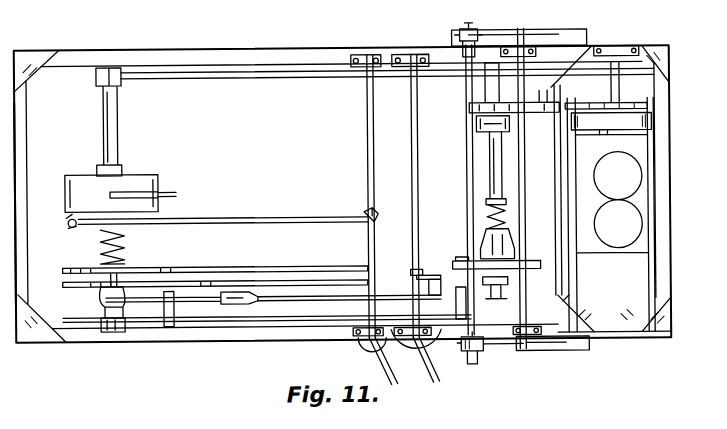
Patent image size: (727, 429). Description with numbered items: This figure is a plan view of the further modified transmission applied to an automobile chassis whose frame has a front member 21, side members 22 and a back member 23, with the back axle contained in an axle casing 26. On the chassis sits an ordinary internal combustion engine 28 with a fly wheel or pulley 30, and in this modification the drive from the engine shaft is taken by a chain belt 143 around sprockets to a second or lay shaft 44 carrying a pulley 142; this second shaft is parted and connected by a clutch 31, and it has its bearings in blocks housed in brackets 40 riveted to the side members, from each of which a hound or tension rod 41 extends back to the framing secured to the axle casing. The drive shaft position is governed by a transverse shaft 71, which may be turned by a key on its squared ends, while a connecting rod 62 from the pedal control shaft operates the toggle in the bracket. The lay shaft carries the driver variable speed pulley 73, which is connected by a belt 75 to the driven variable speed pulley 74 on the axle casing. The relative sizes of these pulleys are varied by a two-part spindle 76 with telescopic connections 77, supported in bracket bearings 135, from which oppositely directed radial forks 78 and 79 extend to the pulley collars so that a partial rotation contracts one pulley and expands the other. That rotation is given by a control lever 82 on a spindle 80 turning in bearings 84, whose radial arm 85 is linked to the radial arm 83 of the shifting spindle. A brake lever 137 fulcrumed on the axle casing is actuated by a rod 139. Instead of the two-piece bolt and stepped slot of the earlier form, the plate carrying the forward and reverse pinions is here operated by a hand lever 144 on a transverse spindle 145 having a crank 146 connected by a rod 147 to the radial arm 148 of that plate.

The front member 21 is at (669, 156).
The side members 22 is at (288, 66).
The back member 23 is at (27, 158).
The axle casing 26 is at (118, 128).
The internal combustion engine 28 is at (618, 199).
The pulley 30 is at (620, 118).
The clutch 31 is at (477, 125).
The bracket 40 is at (588, 350).
The tension rod 41 is at (248, 77).
The second shaft 44 is at (491, 178).
The connecting rod 62 is at (484, 346).
The transverse shaft 71 is at (467, 153).
The driver variable speed pulley 73 is at (463, 258).
The driven variable speed pulley 74 is at (150, 262).
The belt 75 is at (214, 268).
The spindle 76 is at (280, 296).
The telescopic connections 77 is at (245, 293).
The radial fork 78 is at (507, 284).
The radial fork 79 is at (100, 310).
The spindle 80 is at (412, 240).
The control lever 82 is at (432, 372).
The radial arm 83 is at (428, 288).
The bearings 84 is at (400, 55).
The radial arm 85 is at (430, 272).
The bracket bearings 135 is at (455, 300).
The lever 137 is at (117, 190).
The rod 139 is at (167, 190).
The pulley 142 is at (470, 97).
The chain belt 143 is at (542, 112).
The hand lever 144 is at (378, 372).
The transverse spindle 145 is at (366, 163).
The crank 146 is at (377, 217).
The rod 147 is at (248, 218).
The radial arm 148 is at (74, 226).